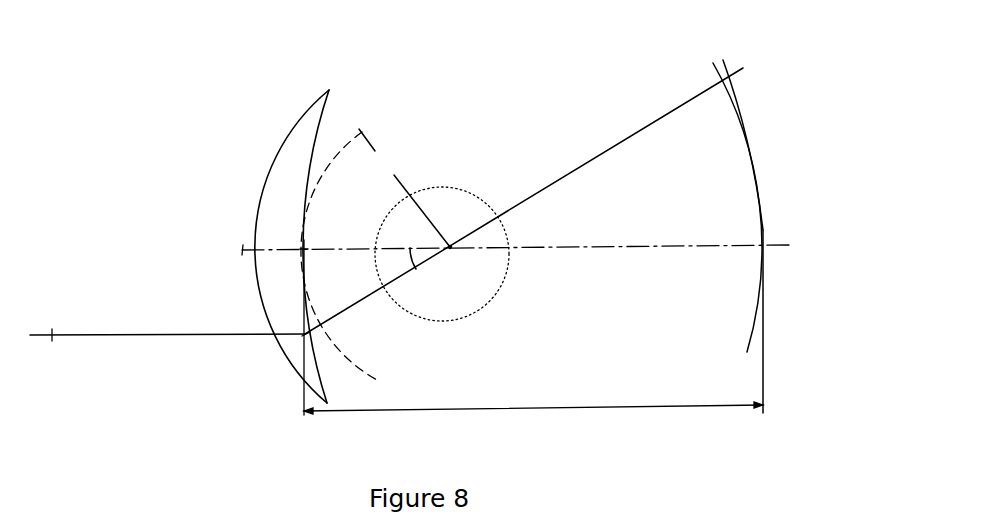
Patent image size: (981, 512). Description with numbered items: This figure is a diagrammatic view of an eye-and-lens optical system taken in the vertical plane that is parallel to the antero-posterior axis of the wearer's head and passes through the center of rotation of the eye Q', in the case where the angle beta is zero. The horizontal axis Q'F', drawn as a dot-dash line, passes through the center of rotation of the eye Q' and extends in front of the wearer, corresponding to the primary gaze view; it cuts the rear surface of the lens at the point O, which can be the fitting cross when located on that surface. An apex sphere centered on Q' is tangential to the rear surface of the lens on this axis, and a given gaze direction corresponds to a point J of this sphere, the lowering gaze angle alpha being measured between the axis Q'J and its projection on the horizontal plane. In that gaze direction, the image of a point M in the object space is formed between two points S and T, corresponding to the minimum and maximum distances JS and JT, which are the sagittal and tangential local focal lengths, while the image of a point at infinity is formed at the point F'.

The point in the object space M is at (167, 351).
The point of intersection of the rear surface of the lens and the axis Q'F' O is at (296, 239).
The center of rotation of the eye Q' is at (459, 233).
The center of curvature / radius reference point O' is at (375, 254).
The point of the apex sphere J is at (327, 335).
The point T is at (718, 205).
The point S is at (743, 134).
The point F' is at (749, 315).